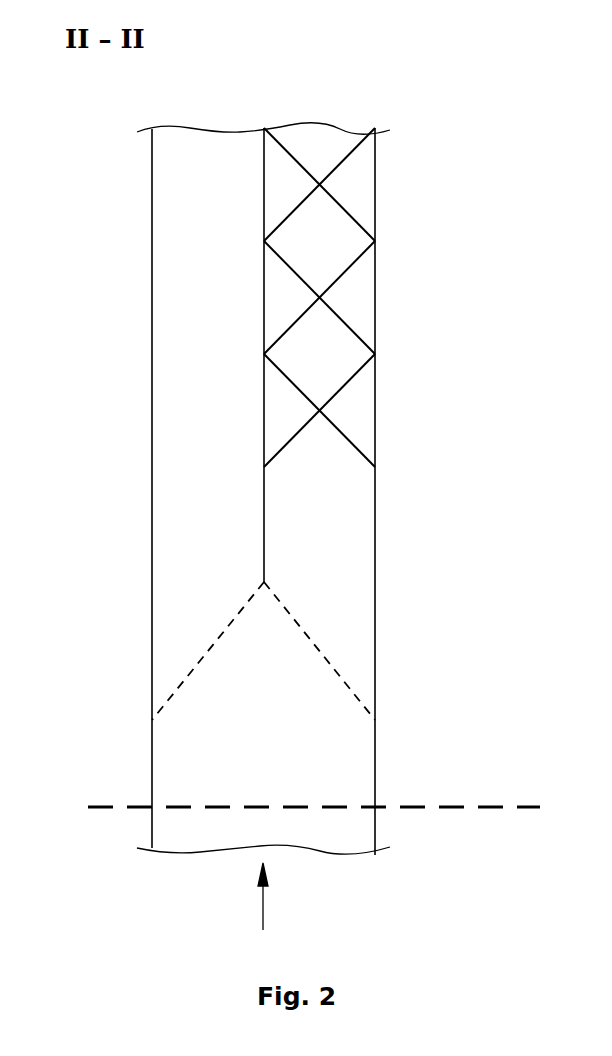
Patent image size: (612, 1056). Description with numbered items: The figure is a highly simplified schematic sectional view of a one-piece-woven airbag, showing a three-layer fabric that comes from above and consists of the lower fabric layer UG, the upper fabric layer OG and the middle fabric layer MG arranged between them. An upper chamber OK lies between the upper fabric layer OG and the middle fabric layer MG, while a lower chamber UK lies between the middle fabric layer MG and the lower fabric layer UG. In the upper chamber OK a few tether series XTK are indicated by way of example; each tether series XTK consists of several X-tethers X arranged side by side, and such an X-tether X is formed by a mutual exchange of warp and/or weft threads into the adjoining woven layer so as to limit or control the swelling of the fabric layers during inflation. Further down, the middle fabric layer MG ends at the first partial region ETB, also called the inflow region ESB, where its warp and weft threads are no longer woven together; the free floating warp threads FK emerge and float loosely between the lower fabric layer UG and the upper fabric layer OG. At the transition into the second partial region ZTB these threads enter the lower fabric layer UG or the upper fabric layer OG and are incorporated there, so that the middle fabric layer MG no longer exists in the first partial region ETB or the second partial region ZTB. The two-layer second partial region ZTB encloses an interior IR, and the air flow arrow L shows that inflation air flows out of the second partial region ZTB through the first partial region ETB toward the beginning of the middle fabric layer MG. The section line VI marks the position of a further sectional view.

The middle fabric layer MG is at (264, 153).
The upper fabric layer OG is at (380, 160).
The lower fabric layer UG is at (152, 192).
The tether series XTK is at (417, 241).
The X-tether X is at (350, 437).
The lower chamber UK is at (228, 377).
The upper chamber OK is at (340, 545).
The first partial region ETB is at (468, 647).
The inflow region ESB is at (480, 653).
The floating warp threads FK is at (345, 683).
The second partial region ZTB is at (394, 723).
The interior of the second partial region IR is at (264, 831).
The air flow arrow L is at (264, 907).
The section line VI is at (101, 800).